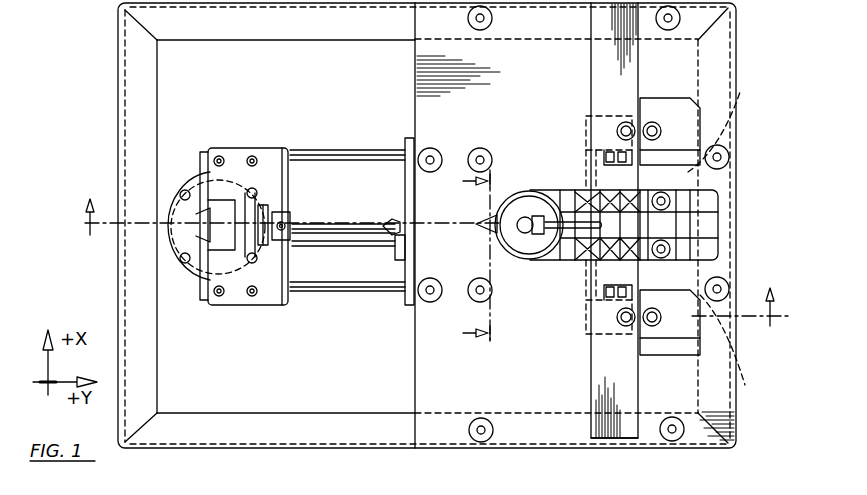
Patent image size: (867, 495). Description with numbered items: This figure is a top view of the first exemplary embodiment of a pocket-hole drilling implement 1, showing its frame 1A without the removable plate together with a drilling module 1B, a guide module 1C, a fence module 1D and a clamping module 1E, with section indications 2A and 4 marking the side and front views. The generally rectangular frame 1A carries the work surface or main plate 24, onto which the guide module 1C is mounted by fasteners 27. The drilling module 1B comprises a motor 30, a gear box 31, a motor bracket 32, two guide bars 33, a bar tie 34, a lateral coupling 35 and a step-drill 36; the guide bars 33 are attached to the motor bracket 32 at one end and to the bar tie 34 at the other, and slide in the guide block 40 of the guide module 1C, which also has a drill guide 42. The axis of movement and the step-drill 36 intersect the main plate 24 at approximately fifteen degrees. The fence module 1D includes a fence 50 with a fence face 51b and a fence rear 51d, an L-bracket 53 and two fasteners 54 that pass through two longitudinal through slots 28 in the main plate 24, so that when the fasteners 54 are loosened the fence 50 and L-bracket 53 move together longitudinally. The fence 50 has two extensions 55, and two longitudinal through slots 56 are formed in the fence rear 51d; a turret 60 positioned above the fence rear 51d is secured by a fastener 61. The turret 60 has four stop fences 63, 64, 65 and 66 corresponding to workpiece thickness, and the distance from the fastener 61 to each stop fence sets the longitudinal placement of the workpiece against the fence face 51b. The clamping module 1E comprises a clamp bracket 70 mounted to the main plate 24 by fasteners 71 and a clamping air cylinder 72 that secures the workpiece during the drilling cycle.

The pocket-hole drilling implement 1 is at (95, 63).
The frame 1A is at (116, 138).
The drilling module 1B is at (298, 146).
The guide module 1C is at (402, 192).
The fence module 1D is at (652, 73).
The clamping module 1E is at (518, 185).
The section line 2A is at (431, 275).
The section line 4 is at (465, 257).
The main plate 24 is at (505, 376).
The fasteners 27 is at (433, 150).
The longitudinal through slots 28 is at (590, 120).
The motor 30 is at (244, 296).
The gear box 31 is at (242, 178).
The motor bracket 32 is at (283, 300).
The guide bars 33 is at (343, 293).
The bar tie 34 is at (600, 300).
The lateral coupling 35 is at (266, 203).
The step-drill 36 is at (298, 218).
The guide block 40 is at (405, 144).
The drill guide 42 is at (482, 228).
The fence 50 is at (591, 72).
The fence face 51b is at (592, 422).
The fence rear 51d is at (642, 422).
The L-bracket 53 is at (588, 262).
The fasteners 54 is at (622, 126).
The fence extensions 55 is at (748, 388).
The longitudinal through slots 56 is at (700, 140).
The turret 60 is at (722, 158).
The fasteners 61 is at (660, 128).
The stop fence 63 is at (680, 128).
The stop fence 64 is at (655, 358).
The stop fence 65 is at (652, 308).
The stop fence 66 is at (640, 343).
The clamp bracket 70 is at (722, 202).
The fasteners 71 is at (668, 204).
The air cylinder 72 is at (531, 244).